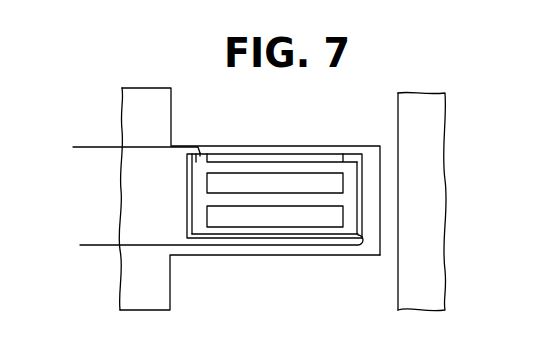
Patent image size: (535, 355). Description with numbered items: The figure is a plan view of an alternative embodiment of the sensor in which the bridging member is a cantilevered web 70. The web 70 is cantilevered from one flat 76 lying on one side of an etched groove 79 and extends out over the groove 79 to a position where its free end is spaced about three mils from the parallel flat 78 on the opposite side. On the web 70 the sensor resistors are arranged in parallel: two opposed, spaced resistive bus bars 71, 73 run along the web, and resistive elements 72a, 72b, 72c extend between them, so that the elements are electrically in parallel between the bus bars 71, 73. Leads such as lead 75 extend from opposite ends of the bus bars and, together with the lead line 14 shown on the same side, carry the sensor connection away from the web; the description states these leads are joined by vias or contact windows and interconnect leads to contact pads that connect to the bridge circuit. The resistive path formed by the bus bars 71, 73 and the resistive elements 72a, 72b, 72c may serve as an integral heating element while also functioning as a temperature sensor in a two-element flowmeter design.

The lead wire 14 is at (97, 147).
The web 70 is at (322, 146).
The resistive bus bar 71 is at (196, 168).
The resistive element 72a is at (272, 170).
The resistive element 72b is at (297, 198).
The resistive element 72c is at (322, 233).
The resistive bus bar 73 is at (348, 210).
The lead 75 is at (83, 245).
The flat 76 is at (145, 100).
The parallel flat 78 is at (435, 127).
The etched groove 79 is at (290, 302).